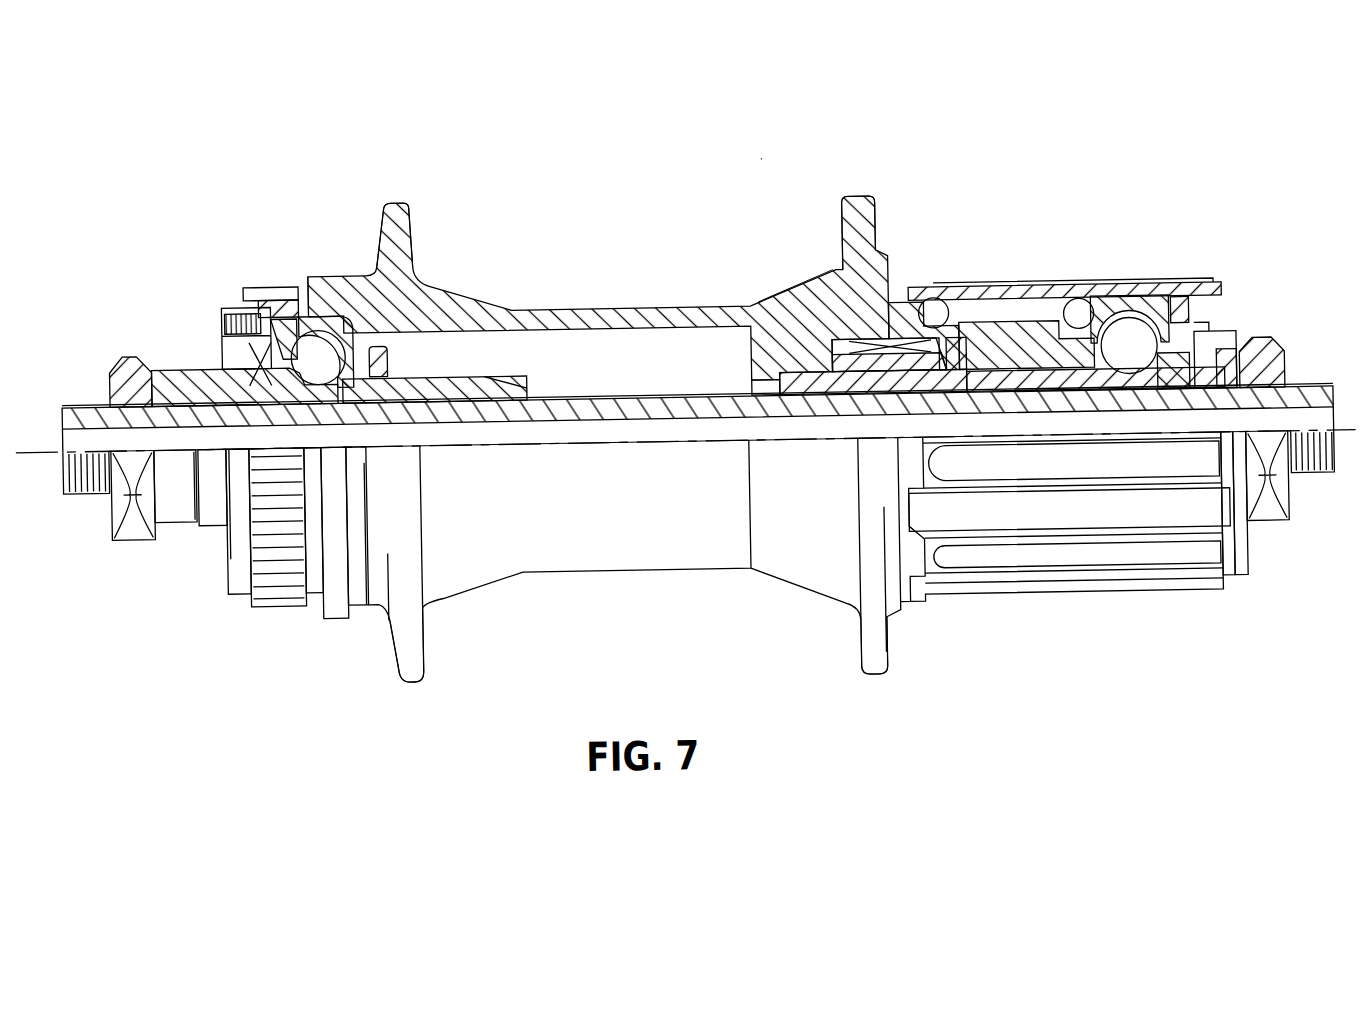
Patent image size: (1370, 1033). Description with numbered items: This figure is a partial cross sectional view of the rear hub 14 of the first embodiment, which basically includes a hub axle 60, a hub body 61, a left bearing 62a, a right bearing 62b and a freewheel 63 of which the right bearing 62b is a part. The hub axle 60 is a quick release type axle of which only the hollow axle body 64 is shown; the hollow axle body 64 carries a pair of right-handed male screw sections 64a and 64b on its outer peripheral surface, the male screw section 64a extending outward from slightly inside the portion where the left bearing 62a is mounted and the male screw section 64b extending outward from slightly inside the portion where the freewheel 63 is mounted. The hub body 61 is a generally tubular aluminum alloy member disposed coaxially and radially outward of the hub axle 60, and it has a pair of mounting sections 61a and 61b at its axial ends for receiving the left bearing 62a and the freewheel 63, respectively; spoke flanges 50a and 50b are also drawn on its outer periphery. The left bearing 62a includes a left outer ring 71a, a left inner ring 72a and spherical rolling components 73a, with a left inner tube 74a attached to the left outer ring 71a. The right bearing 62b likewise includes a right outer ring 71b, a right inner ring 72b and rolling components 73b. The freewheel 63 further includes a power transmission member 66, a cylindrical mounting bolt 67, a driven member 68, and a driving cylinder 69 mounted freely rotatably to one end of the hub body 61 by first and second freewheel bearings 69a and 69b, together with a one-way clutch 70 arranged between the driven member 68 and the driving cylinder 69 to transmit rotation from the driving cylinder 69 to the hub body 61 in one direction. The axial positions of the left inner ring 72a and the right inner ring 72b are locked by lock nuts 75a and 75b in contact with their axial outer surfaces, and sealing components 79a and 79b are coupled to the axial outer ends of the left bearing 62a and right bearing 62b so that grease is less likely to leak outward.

The rear hub 14 is at (768, 160).
The first spoke flange 50a is at (404, 198).
The second spoke flange 50b is at (866, 199).
The hub axle 60 is at (607, 395).
The hub body 61 is at (565, 305).
The mounting section 61a is at (312, 292).
The mounting section 61b is at (808, 302).
The left bearing 62a is at (405, 354).
The right bearing 62b is at (1150, 304).
The freewheel 63 is at (1040, 260).
The hollow axle body 64 is at (655, 420).
The male screw section 64a is at (95, 396).
The male screw section 64b is at (1292, 396).
The power transmission member 66 is at (850, 375).
The cylindrical mounting bolt 67 is at (875, 398).
The driven member 68 is at (915, 305).
The driving cylinder 69 is at (975, 292).
The first freewheel bearing 69a is at (936, 302).
The second freewheel bearing 69b is at (1080, 305).
The one-way clutch 70 is at (1002, 326).
The left outer ring 71a is at (312, 318).
The right outer ring 71b is at (1112, 316).
The left inner ring 72a is at (213, 364).
The right inner ring 72b is at (1195, 352).
The rolling component 73a is at (325, 345).
The rolling component 73b is at (1140, 368).
The left inner tube 74a is at (513, 370).
The lock nut 75a is at (130, 522).
The lock nut 75b is at (1265, 532).
The sealing component 79a is at (240, 323).
The sealing component 79b is at (1218, 358).